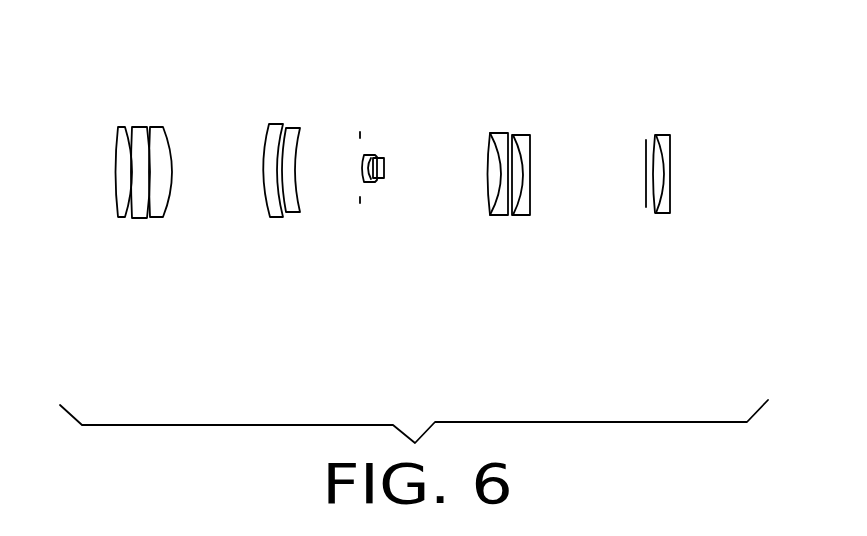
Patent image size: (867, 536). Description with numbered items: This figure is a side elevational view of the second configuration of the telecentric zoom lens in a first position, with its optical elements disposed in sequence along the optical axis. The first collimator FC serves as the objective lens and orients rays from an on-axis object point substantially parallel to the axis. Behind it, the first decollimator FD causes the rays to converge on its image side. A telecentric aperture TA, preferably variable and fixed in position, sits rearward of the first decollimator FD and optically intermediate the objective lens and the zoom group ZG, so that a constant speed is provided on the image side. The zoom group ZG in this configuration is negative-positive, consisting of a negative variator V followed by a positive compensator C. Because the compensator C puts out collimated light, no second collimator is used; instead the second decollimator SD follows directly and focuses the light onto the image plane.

The first collimator FC is at (182, 112).
The first decollimator FD is at (312, 112).
The telecentric aperture TA is at (360, 127).
The variator V is at (393, 227).
The compensator C is at (538, 107).
The zoom group ZG is at (446, 182).
The second decollimator SD is at (682, 223).